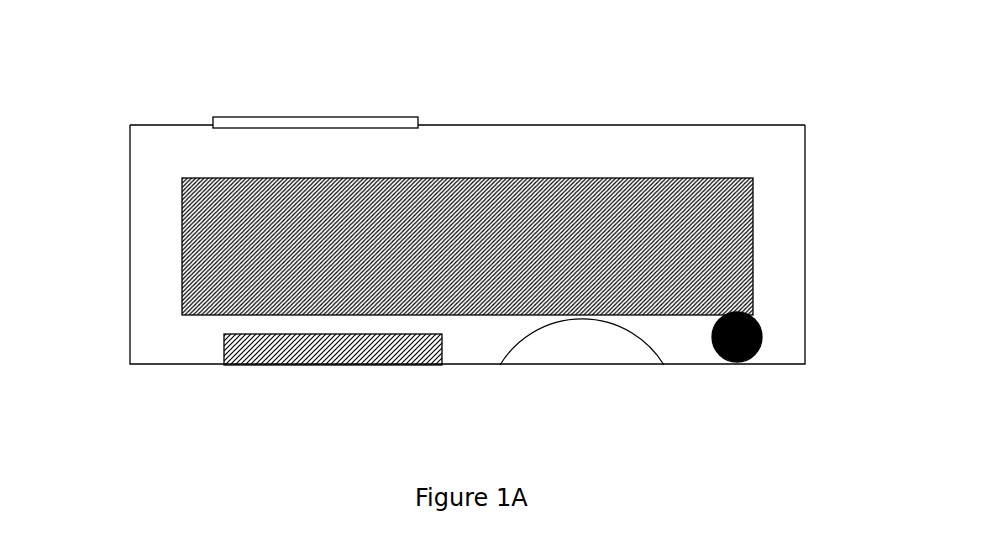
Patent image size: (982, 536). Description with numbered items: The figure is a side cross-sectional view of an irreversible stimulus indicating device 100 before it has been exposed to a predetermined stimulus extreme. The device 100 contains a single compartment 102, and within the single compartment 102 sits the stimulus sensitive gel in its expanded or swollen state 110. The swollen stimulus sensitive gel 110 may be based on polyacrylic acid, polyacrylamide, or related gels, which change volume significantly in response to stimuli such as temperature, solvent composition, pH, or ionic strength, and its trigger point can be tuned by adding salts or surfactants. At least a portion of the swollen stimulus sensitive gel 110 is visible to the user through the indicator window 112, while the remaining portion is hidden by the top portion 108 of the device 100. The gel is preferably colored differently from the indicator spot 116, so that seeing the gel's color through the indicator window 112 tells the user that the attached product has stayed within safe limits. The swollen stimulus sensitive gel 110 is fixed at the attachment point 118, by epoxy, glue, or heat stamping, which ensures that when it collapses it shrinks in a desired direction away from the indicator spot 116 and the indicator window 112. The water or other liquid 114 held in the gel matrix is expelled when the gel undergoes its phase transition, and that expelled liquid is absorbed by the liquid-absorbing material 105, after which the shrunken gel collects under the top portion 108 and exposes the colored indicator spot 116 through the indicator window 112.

The irreversible stimulus indicating device 100 is at (452, 229).
The single compartment 102 is at (699, 143).
The liquid-absorbing material 105 is at (577, 352).
The top portion 108 is at (543, 125).
The swollen stimulus sensitive gel 110 is at (192, 295).
The indicator window 112 is at (306, 125).
The liquid 114 is at (745, 198).
The indicator spot 116 is at (332, 365).
The attachment point 118 is at (737, 362).